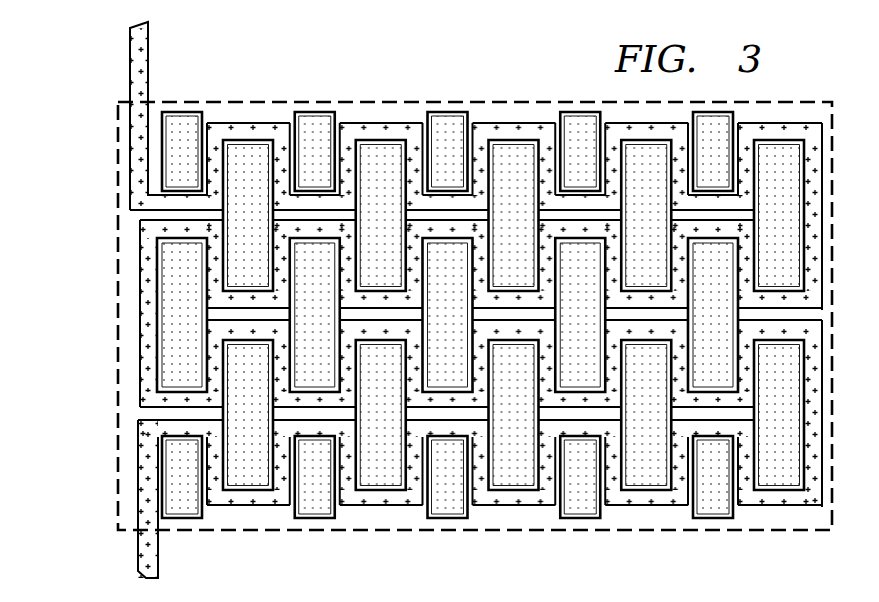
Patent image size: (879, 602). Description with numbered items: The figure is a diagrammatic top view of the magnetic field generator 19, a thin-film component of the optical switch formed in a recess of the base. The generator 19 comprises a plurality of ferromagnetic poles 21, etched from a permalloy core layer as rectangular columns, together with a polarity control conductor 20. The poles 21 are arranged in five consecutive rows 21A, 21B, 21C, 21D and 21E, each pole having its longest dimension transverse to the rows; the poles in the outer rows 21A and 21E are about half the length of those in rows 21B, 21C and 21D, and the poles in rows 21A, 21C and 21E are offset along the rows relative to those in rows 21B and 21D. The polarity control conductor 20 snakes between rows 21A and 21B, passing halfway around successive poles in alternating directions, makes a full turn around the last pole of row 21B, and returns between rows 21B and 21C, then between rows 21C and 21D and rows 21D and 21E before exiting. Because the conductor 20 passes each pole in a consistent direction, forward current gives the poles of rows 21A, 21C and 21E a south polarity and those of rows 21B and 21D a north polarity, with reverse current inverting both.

The magnetic field generator 19 is at (345, 101).
The polarity control conductor 20 is at (128, 74).
The poles 21 is at (447, 112).
The first row of poles 21A is at (106, 148).
The second row of poles 21B is at (106, 213).
The third row of poles 21C is at (106, 310).
The fourth row of poles 21D is at (106, 415).
The fifth row of poles 21E is at (106, 479).